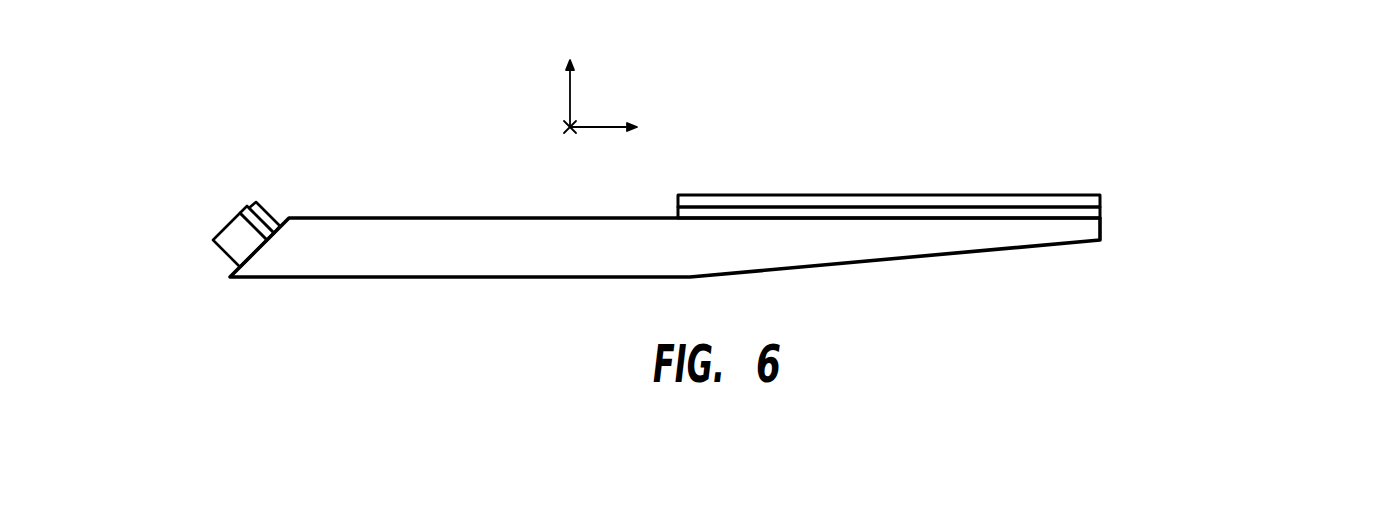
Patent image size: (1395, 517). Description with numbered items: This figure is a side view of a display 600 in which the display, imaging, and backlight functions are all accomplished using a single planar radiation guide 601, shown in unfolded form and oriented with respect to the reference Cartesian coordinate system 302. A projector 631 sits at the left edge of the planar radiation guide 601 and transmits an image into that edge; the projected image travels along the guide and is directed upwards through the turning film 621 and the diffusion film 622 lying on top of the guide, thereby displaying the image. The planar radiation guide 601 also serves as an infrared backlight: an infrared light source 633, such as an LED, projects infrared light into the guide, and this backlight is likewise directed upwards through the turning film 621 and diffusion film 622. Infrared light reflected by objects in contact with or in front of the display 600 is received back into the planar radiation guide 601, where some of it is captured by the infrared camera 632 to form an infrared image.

The display 600 is at (473, 139).
The planar radiation guide 601 is at (473, 261).
The turning film 621 is at (1104, 216).
The diffusion film 622 is at (1103, 197).
The projector 631 is at (223, 232).
The infrared camera 632 is at (248, 210).
The infrared light source 633 is at (271, 204).
The reference Cartesian coordinate system 302 is at (602, 124).